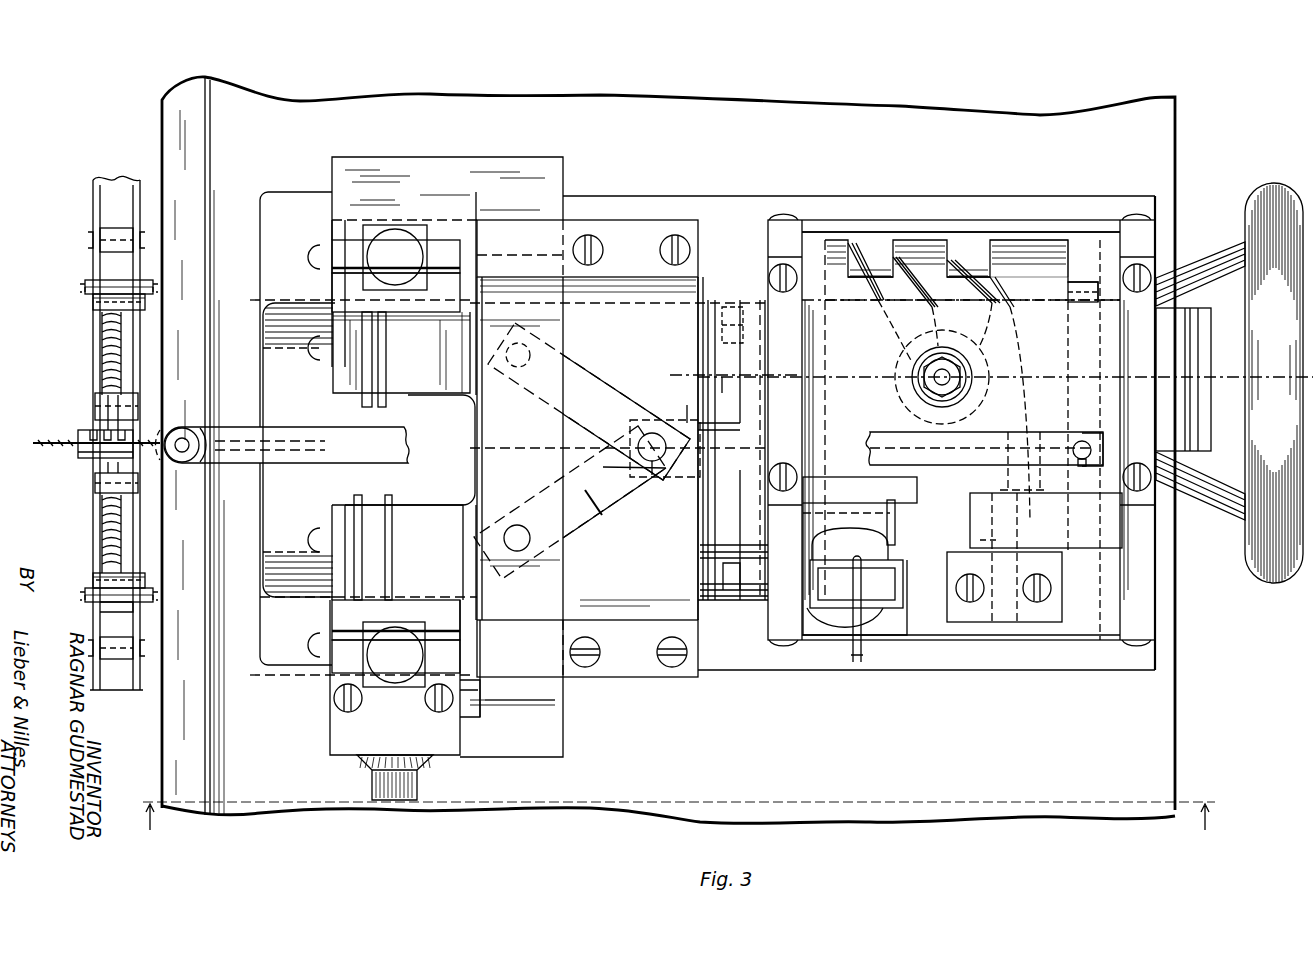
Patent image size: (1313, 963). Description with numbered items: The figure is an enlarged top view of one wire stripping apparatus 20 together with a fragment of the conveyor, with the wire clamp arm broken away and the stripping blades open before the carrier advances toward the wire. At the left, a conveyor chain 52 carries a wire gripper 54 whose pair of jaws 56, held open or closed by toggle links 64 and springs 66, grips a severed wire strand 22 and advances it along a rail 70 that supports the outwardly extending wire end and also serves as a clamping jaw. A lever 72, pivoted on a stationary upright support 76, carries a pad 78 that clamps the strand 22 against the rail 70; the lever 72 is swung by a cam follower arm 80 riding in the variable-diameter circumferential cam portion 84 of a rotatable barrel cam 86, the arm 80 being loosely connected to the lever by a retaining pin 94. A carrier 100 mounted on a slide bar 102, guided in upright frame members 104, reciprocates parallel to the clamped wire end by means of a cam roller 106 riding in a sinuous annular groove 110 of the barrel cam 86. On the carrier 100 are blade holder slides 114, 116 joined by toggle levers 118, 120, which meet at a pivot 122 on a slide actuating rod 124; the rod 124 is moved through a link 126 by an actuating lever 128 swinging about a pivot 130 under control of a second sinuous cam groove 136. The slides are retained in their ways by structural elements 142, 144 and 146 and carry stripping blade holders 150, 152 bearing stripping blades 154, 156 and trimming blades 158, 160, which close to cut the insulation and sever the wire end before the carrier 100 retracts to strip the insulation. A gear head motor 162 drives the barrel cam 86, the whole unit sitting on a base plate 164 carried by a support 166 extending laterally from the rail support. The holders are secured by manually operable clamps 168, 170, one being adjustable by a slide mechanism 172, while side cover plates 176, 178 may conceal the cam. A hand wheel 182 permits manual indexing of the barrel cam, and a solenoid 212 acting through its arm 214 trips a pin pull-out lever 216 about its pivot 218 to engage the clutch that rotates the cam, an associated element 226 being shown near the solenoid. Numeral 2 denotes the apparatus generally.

The rod 2 is at (1307, 421).
The wire stripping apparatus 20 is at (709, 400).
The wire strand 22 is at (48, 443).
The conveyor chain 52 is at (93, 224).
The wire gripper 54 is at (68, 412).
The jaws 56 is at (80, 455).
The toggle links 64 is at (108, 282).
The springs 66 is at (102, 351).
The rail 70 is at (193, 172).
The lever 72 is at (340, 466).
The upright support 76 is at (765, 290).
The pad 78 is at (190, 470).
The arm 80 is at (1080, 438).
The circumferential cam portion 84 is at (1086, 290).
The barrel cam 86 is at (1020, 250).
The retaining pin 94 is at (1098, 446).
The carrier 100 is at (462, 508).
The slide bar 102 is at (866, 336).
The upright frame members 104 is at (1148, 320).
The cam roller 106 is at (938, 356).
The annular groove 110 is at (870, 248).
The blade holder slide 114 is at (438, 170).
The blade holder slide 116 is at (548, 740).
The toggle lever 118 is at (606, 518).
The toggle lever 120 is at (616, 406).
The pivot 122 is at (649, 480).
The slide actuating rod 124 is at (683, 418).
The link 126 is at (1010, 492).
The actuating lever 128 is at (1055, 536).
The pivot 130 is at (975, 540).
The sinuous cam groove 136 is at (962, 262).
The structural element 142 is at (332, 271).
The structural element 144 is at (332, 622).
The structural element 146 is at (552, 242).
The stripping blade holder 150 is at (334, 295).
The stripping blade holder 152 is at (339, 636).
The stripping blade 154 is at (362, 405).
The stripping blade 156 is at (352, 497).
The trimming blade 158 is at (386, 403).
The trimming blade 160 is at (398, 480).
The gear head motor 162 is at (710, 598).
The base plate 164 is at (748, 668).
The support 166 is at (673, 822).
The manually operable clamp 168 is at (417, 222).
The manually operable clamp 170 is at (418, 690).
The slide mechanism 172 is at (330, 732).
The side cover plate 176 is at (976, 640).
The side cover plate 178 is at (1000, 225).
The hand wheel 182 is at (1256, 196).
The solenoid 212 is at (885, 612).
The arm 214 is at (895, 574).
The pin pull-out lever 216 is at (803, 535).
The pivot 218 is at (860, 522).
The pin 226 is at (856, 652).